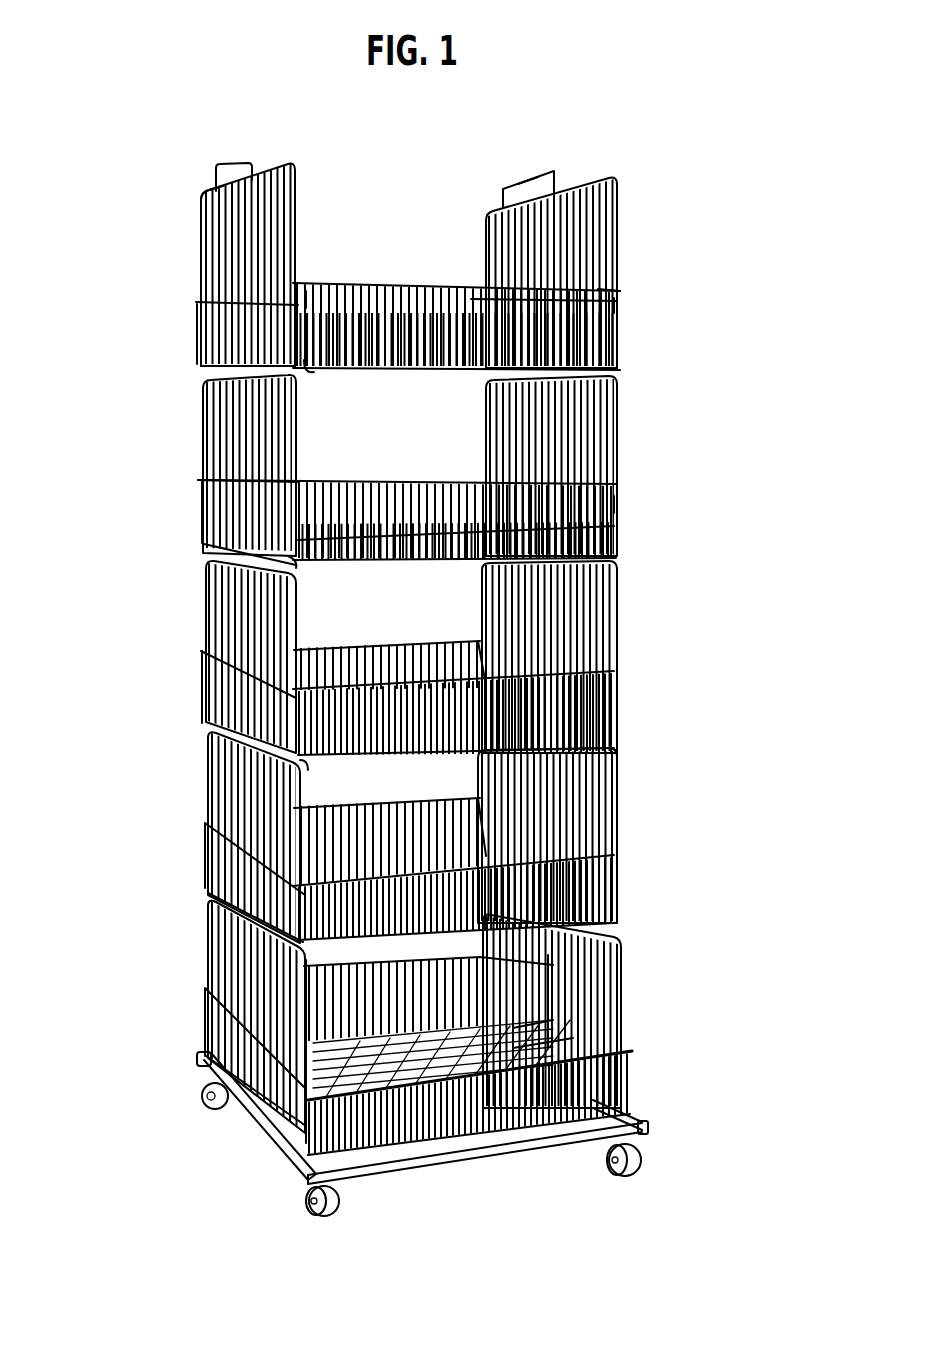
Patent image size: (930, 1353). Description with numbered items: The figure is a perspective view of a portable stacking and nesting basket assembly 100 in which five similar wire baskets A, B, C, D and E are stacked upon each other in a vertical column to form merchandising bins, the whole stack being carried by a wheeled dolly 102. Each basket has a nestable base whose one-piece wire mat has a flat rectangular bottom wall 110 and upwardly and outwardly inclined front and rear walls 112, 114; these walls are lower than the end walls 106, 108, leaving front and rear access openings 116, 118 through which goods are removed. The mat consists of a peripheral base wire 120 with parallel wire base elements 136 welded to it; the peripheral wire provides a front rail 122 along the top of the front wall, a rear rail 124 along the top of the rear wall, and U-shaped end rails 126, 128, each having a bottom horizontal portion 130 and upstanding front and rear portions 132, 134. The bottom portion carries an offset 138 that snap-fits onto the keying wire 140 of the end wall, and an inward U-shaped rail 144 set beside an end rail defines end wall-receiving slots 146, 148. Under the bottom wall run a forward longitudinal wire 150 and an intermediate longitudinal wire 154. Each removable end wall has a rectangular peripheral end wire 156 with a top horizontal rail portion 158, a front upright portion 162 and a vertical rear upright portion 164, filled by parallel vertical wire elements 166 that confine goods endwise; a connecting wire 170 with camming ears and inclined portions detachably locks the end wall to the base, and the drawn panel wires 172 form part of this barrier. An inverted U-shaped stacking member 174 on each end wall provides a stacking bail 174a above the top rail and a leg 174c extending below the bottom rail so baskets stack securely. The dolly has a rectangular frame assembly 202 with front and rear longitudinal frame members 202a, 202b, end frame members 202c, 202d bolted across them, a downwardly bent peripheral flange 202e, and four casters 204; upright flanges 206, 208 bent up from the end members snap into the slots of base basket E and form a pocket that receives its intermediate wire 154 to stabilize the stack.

The portable stacking and nesting basket assembly 100 is at (628, 722).
The wheeled dolly 102 is at (475, 1162).
The end wall 106 is at (290, 150).
The end wall 108 is at (613, 167).
The bottom wall 110 is at (398, 363).
The front wall 112 is at (352, 283).
The rear wall 114 is at (453, 633).
The front access opening 116 is at (412, 266).
The rear access opening 118 is at (400, 630).
The peripheral base wire 120 is at (612, 282).
The front elongated rail 122 is at (565, 852).
The rear elongated rail 124 is at (355, 470).
The U-shaped end rail 126 is at (188, 330).
The U-shaped end rail 128 is at (607, 338).
The bottom horizontal portion 130 is at (203, 517).
The upstanding front portion 132 is at (290, 557).
The upstanding rear portion 134 is at (190, 487).
The wire base elements 136 is at (575, 520).
The offset 138 is at (210, 895).
The keying wire 140 is at (220, 797).
The inward U-shaped rail 144 is at (600, 355).
The end wall-receiving slot 146 is at (300, 360).
The end wall-receiving slot 148 is at (600, 707).
The forward longitudinal wire 150 is at (372, 1145).
The intermediate longitudinal wire 154 is at (490, 1078).
The peripheral end wire 156 is at (600, 738).
The top horizontal rail portion 158 is at (197, 180).
The front upright portion 162 is at (287, 218).
The rear upright portion 164 is at (190, 262).
The vertical wire elements 166 is at (573, 207).
The connecting wire 170 is at (300, 290).
The panel wires 172 is at (270, 428).
The inverted U-shaped stacking member 174 is at (551, 166).
The stacking bail 174a is at (227, 148).
The leg of stacking member 174c is at (540, 957).
The frame assembly 202 is at (640, 1138).
The front longitudinal frame member 202a is at (432, 1170).
The rear longitudinal frame member 202b is at (195, 1048).
The end frame member 202c is at (258, 1145).
The end frame member 202d is at (620, 1107).
The peripheral flange 202e is at (636, 1120).
The caster 204 is at (205, 1105).
The front upright flange 206 is at (560, 1030).
The upright flange 208 is at (512, 1016).
The wire basket A is at (176, 224).
The wire basket B is at (176, 410).
The wire basket C is at (176, 584).
The wire basket D is at (184, 760).
The base basket E is at (184, 930).